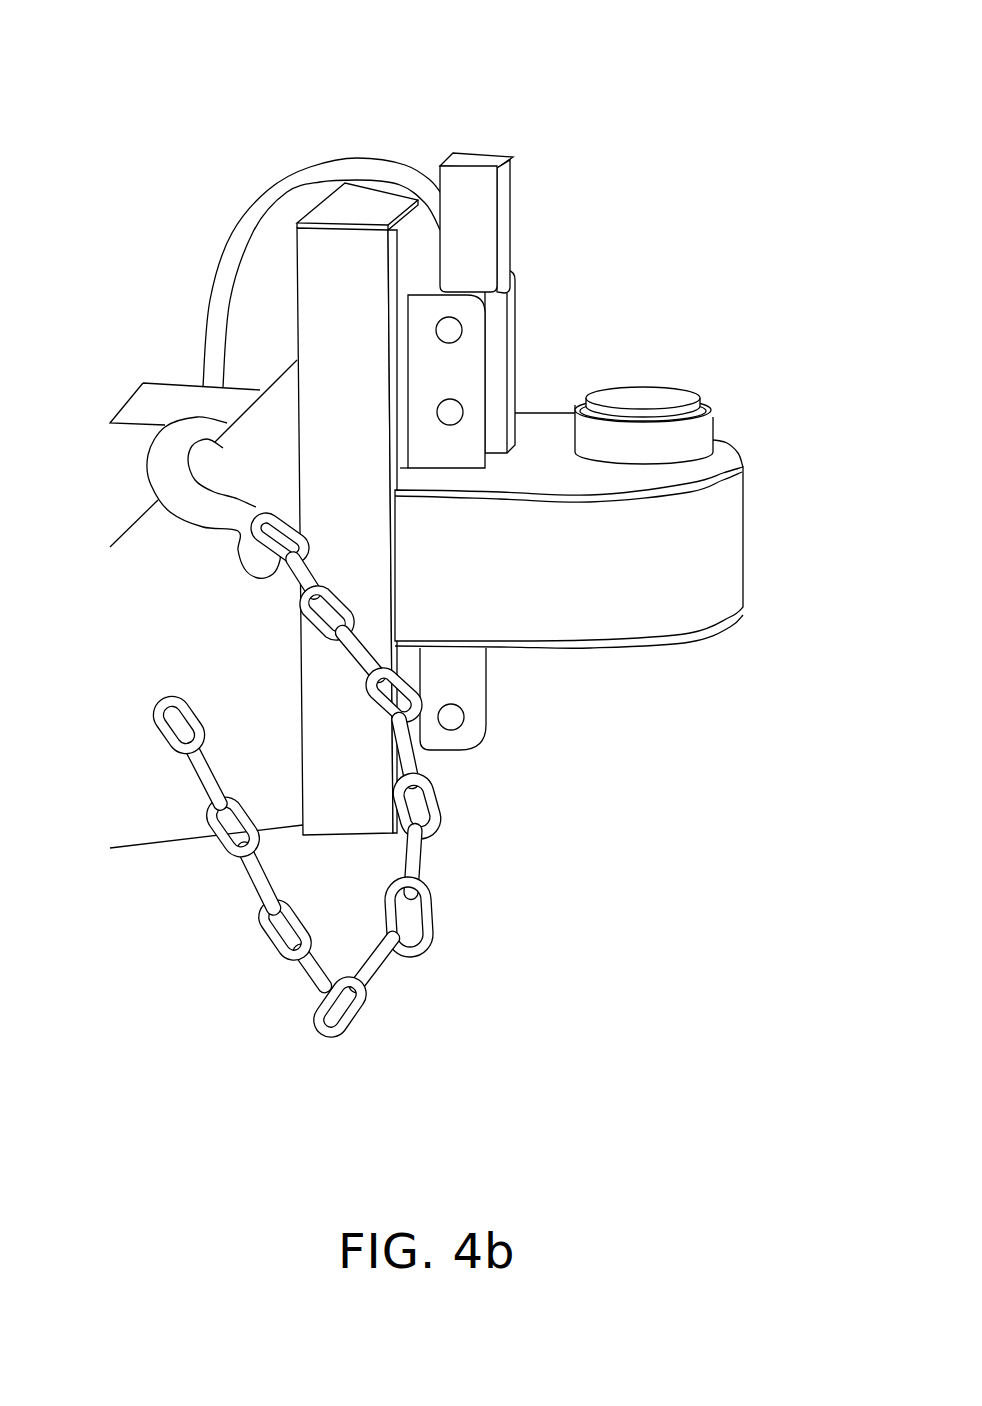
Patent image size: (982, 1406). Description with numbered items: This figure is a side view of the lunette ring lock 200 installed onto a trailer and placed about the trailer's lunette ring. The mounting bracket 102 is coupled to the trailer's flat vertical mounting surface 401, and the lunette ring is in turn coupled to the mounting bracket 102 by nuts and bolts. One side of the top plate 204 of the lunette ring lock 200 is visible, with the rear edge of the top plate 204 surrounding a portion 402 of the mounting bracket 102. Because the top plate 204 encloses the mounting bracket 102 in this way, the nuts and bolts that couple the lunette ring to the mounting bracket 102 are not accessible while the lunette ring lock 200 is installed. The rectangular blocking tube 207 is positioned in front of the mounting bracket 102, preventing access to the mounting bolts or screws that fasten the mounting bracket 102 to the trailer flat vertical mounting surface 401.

The trailer flat vertical mounting surface 401 is at (406, 242).
The rectangular blocking tube 207 is at (518, 173).
The mounting bracket 102 is at (487, 342).
The lunette ring lock 200 is at (684, 335).
The top plate 204 is at (562, 583).
The portion of the mounting bracket 402 is at (426, 470).